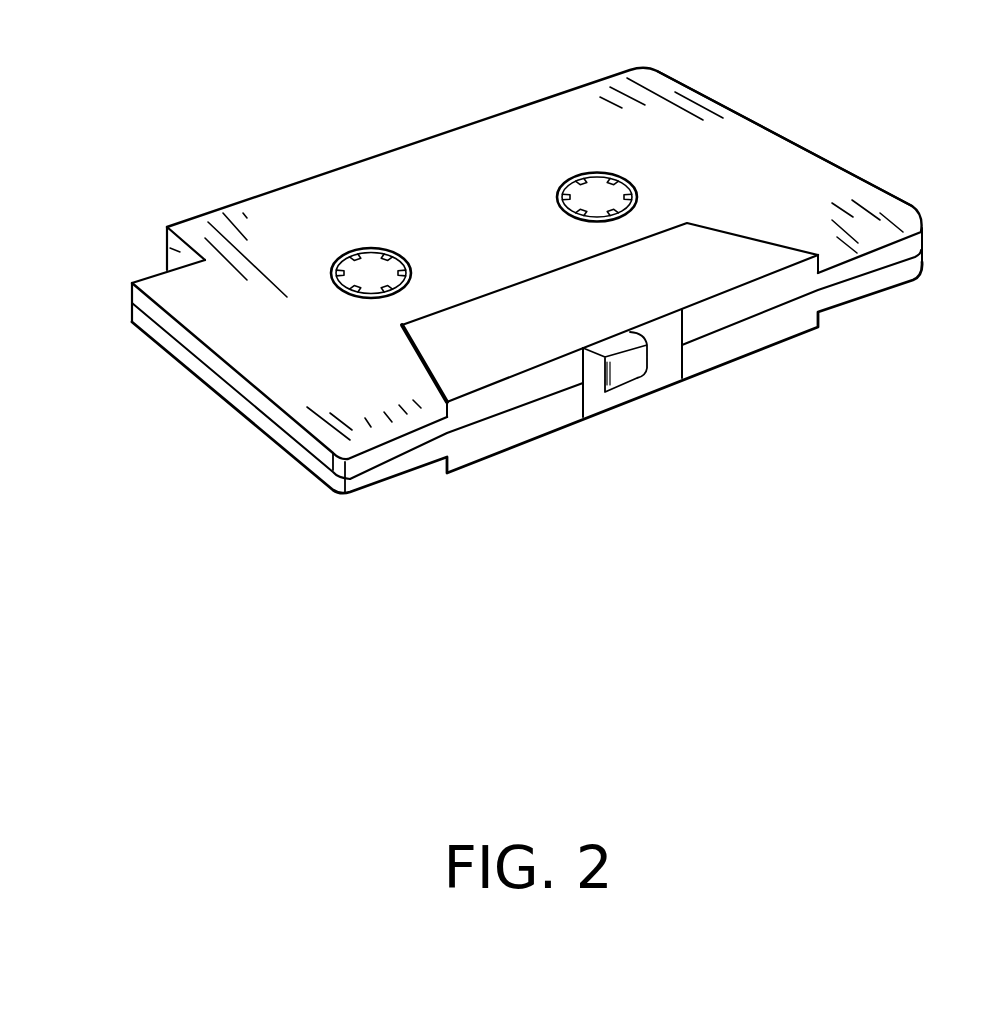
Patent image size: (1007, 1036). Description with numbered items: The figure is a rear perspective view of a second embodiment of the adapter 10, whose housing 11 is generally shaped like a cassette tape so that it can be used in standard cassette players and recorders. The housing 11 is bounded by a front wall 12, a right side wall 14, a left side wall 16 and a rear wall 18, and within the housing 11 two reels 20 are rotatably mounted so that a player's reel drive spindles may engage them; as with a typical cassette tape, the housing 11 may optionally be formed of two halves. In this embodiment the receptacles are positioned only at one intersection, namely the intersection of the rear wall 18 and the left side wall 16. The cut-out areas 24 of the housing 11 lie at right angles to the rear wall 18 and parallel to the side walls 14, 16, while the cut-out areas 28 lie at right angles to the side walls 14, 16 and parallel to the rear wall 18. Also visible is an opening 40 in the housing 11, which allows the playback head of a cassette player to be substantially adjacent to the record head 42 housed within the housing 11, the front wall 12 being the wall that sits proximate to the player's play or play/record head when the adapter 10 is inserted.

The adapter 10 is at (208, 577).
The housing 11 is at (807, 214).
The front wall 12 is at (381, 469).
The right side wall 14 is at (749, 125).
The left side wall 16 is at (227, 393).
The rear wall 18 is at (400, 150).
The reels 20 is at (397, 253).
The cut-out areas 24 is at (168, 250).
The cut-out areas 28 is at (131, 290).
The opening 40 is at (612, 405).
The record head 42 is at (645, 383).